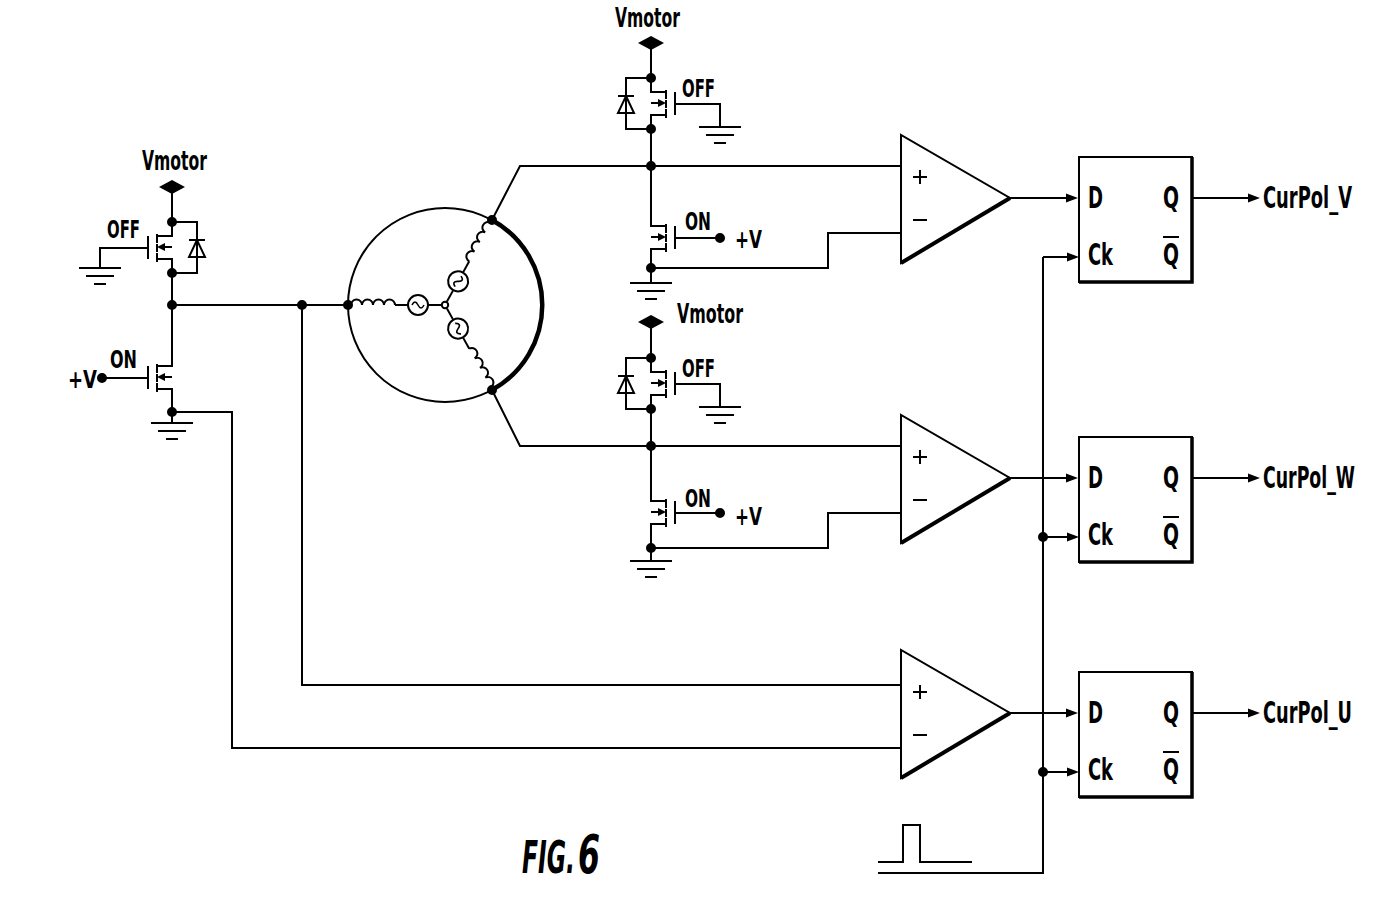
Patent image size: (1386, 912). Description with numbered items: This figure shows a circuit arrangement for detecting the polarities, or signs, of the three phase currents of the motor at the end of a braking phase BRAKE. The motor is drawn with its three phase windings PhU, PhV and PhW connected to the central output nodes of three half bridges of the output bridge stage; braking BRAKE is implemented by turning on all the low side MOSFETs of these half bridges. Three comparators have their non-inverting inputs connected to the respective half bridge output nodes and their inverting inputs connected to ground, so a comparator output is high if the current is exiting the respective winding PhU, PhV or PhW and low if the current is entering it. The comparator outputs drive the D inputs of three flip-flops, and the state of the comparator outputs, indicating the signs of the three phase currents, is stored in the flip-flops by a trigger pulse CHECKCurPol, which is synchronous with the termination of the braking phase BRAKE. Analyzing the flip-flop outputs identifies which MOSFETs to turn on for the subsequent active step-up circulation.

The braking phase BRAKE is at (443, 238).
The phase U winding PhU is at (474, 260).
The phase V winding PhV is at (393, 288).
The phase W winding PhW is at (458, 351).
The trigger pulse CheckCurPol CHECKCurPol is at (892, 573).